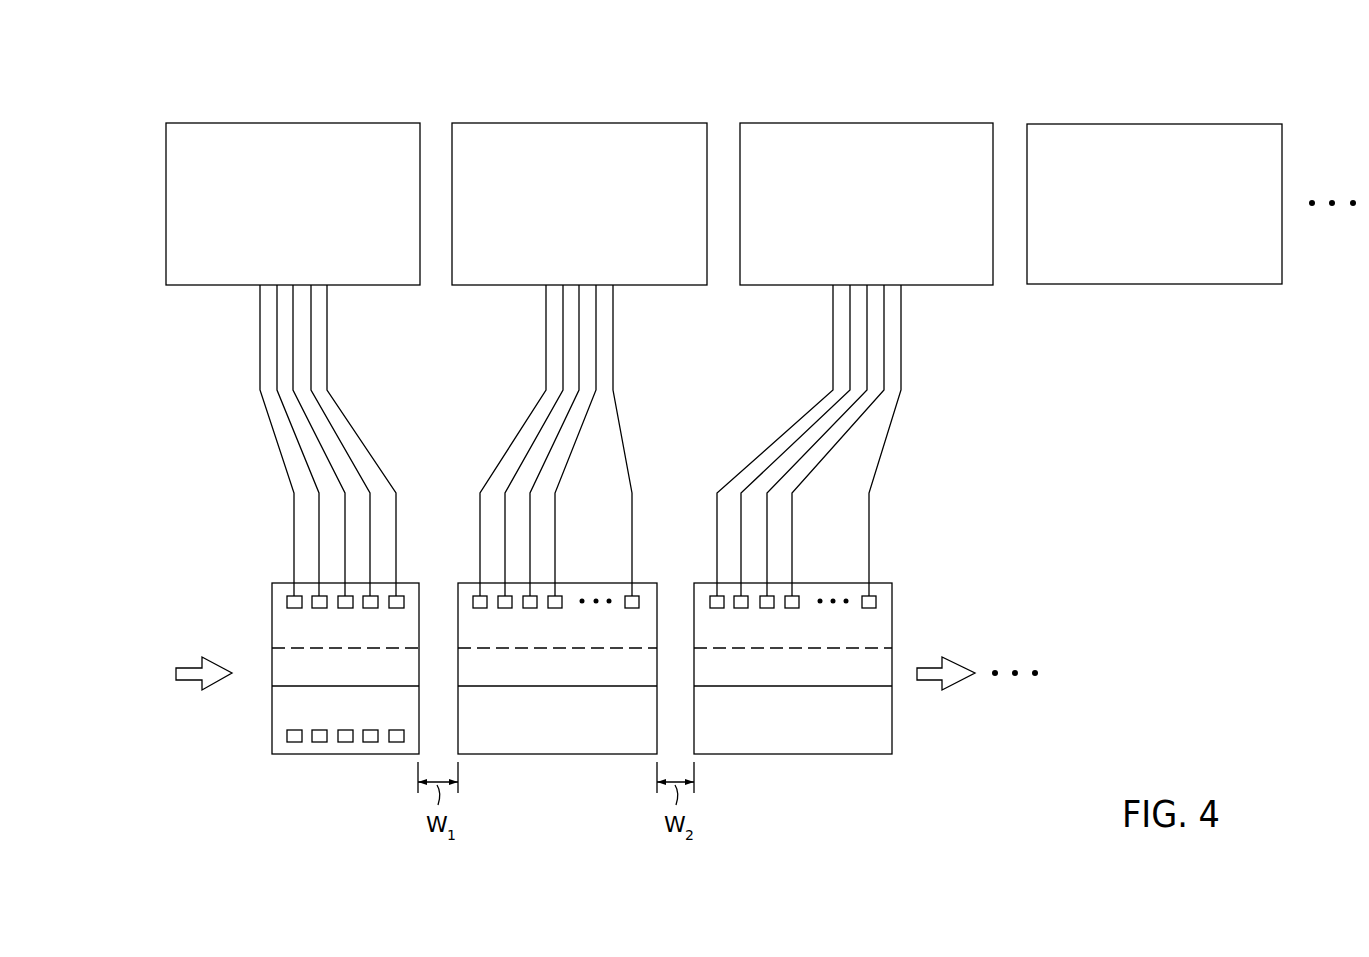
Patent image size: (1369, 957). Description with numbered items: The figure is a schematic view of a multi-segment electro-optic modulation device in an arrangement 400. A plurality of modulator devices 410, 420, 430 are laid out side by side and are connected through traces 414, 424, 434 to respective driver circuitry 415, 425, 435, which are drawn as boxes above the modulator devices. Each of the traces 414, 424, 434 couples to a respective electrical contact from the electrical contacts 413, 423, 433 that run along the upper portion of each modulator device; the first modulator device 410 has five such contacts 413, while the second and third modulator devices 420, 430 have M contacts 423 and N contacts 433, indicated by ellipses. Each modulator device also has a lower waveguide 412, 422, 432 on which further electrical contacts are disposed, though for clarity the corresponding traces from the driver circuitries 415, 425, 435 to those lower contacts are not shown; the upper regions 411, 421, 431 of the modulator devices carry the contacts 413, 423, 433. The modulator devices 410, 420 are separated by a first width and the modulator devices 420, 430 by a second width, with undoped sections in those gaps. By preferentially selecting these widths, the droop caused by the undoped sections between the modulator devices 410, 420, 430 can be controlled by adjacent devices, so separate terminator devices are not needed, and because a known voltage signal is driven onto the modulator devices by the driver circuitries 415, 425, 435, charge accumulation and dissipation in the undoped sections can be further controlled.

The arrangement 400 is at (1215, 95).
The modulator device 410 is at (296, 691).
The first region of package 410 411 is at (262, 638).
The lower waveguide 412 is at (262, 705).
The electrical contacts 413 is at (290, 669).
The traces 414 is at (242, 438).
The driver circuitry 415 is at (237, 123).
The modulator device 420 is at (557, 714).
The first region of package 420 421 is at (505, 647).
The lower waveguide 422 is at (515, 740).
The electrical contacts 423 is at (473, 610).
The traces 424 is at (507, 398).
The driver circuitry 425 is at (521, 123).
The modulator device 430 is at (793, 714).
The first region of package 430 431 is at (745, 647).
The lower waveguide 432 is at (748, 740).
The electrical contacts 433 is at (710, 610).
The traces 434 is at (772, 400).
The driver circuitry 435 is at (808, 123).